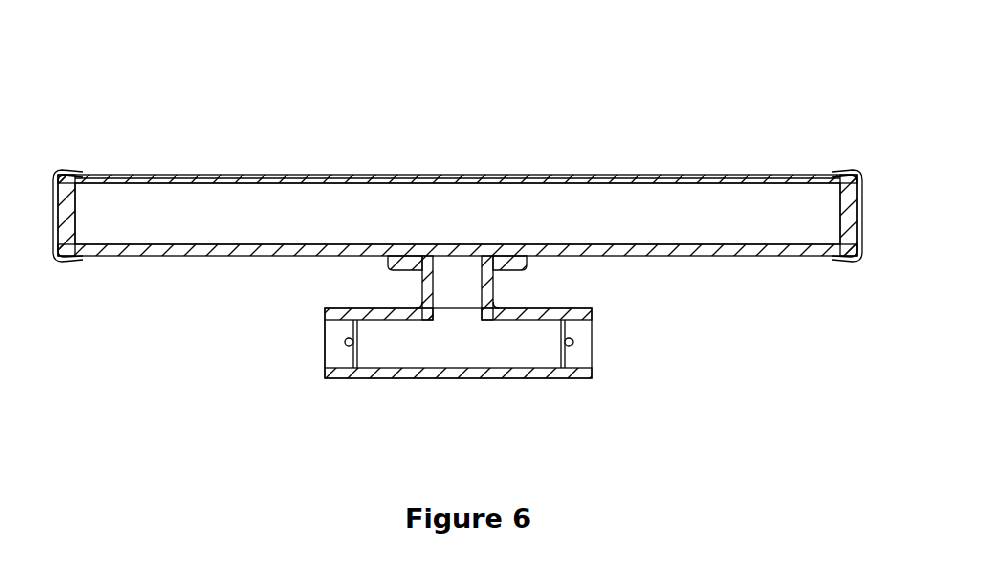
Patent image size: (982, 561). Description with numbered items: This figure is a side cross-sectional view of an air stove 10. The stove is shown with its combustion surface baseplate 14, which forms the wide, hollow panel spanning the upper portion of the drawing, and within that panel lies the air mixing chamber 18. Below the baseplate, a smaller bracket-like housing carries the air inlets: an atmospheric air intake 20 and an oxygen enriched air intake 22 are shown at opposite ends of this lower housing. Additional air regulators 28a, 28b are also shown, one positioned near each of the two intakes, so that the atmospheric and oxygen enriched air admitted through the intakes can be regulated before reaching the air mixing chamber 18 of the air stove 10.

The air stove 10 is at (237, 127).
The combustion surface baseplate 14 is at (663, 177).
The air mixing chamber 18 is at (433, 208).
The atmospheric air intake 20 is at (578, 343).
The oxygen enriched air intake 22 is at (337, 343).
The air regulator 28a is at (355, 360).
The air regulator 28b is at (563, 360).